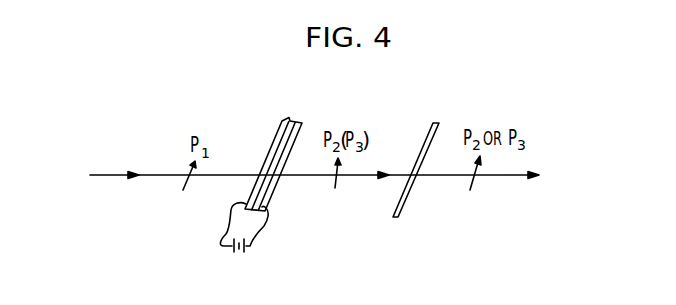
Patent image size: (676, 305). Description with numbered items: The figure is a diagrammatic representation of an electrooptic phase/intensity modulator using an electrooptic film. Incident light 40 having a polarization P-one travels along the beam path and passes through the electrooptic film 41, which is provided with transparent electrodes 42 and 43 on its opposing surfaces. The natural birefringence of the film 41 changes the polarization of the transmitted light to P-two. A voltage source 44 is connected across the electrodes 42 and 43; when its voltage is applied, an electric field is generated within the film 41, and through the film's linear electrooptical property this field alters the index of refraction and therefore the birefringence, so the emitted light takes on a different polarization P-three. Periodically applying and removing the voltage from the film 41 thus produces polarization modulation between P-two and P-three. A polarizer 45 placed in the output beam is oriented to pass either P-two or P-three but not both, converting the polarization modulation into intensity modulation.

The incident light 40 is at (160, 176).
The electrooptic film 41 is at (265, 148).
The transparent electrode 42 is at (247, 193).
The transparent electrode 43 is at (266, 196).
The voltage source 44 is at (249, 248).
The polarizer 45 is at (403, 208).